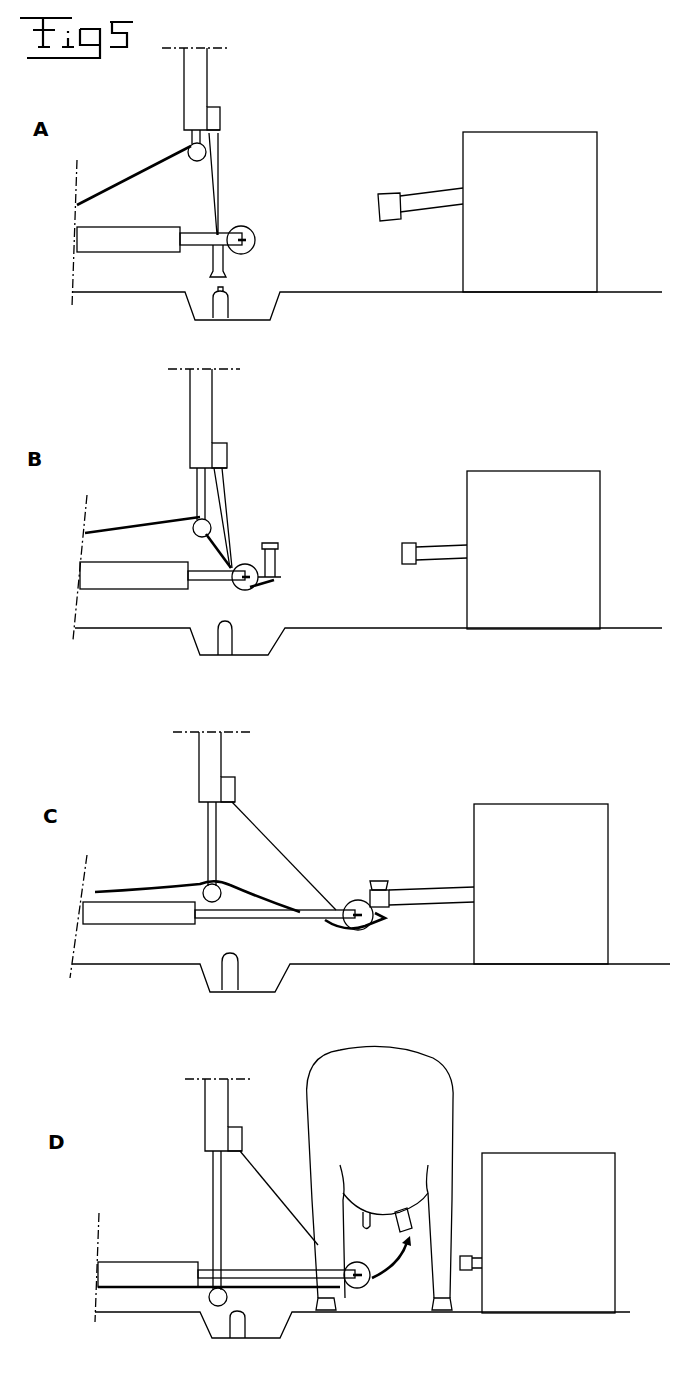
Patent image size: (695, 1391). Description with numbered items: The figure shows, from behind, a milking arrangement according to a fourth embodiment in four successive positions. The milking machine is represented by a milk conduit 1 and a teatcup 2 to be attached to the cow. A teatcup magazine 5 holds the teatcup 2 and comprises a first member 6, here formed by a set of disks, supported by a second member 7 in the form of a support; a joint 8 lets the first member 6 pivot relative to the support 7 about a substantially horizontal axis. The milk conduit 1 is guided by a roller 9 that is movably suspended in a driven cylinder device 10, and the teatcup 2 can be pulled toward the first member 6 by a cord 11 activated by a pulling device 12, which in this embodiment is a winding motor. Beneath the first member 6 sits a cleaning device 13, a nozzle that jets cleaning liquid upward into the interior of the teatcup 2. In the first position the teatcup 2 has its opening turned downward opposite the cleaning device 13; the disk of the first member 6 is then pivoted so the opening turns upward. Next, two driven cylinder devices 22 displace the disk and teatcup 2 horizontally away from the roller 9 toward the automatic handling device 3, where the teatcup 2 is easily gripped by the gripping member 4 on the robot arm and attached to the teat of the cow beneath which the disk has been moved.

In FIG. 5A, the milk conduit 1 is at (108, 185).
In FIG. 5B, the milk conduit 1 is at (105, 533).
In FIG. 5C, the milk conduit 1 is at (135, 890).
In FIG. 5D, the milk conduit 1 is at (265, 1292).
In FIG. 5A, the teatcup 2 is at (225, 262).
In FIG. 5B, the teatcup 2 is at (273, 543).
In FIG. 5C, the teatcup 2 is at (378, 880).
In FIG. 5D, the teatcup 2 is at (412, 1228).
In FIG. 5A, the automatic handling device 3 is at (495, 137).
In FIG. 5B, the automatic handling device 3 is at (505, 480).
In FIG. 5C, the automatic handling device 3 is at (512, 813).
In FIG. 5D, the automatic handling device 3 is at (535, 1163).
In FIG. 5A, the gripping member 4 is at (389, 195).
In FIG. 5B, the gripping member 4 is at (407, 545).
In FIG. 5C, the gripping member 4 is at (385, 895).
In FIG. 5D, the gripping member 4 is at (463, 1256).
In FIG. 5A, the teatcup magazine 5 is at (286, 211).
In FIG. 5B, the teatcup magazine 5 is at (306, 548).
In FIG. 5C, the teatcup magazine 5 is at (332, 864).
In FIG. 5D, the teatcup magazine 5 is at (395, 1310).
In FIG. 5A, the first member 6 is at (242, 226).
In FIG. 5B, the first member 6 is at (241, 565).
In FIG. 5C, the first member 6 is at (368, 928).
In FIG. 5D, the first member 6 is at (362, 1262).
In FIG. 5A, the second member 7 is at (190, 248).
In FIG. 5B, the second member 7 is at (210, 580).
In FIG. 5C, the second member 7 is at (278, 925).
In FIG. 5D, the second member 7 is at (262, 1275).
In FIG. 5A, the joint 8 is at (248, 240).
In FIG. 5B, the joint 8 is at (255, 588).
In FIG. 5C, the joint 8 is at (348, 930).
In FIG. 5D, the joint 8 is at (358, 1285).
In FIG. 5A, the roller 9 is at (197, 160).
In FIG. 5B, the roller 9 is at (196, 535).
In FIG. 5C, the roller 9 is at (205, 880).
In FIG. 5D, the roller 9 is at (228, 1298).
In FIG. 5A, the cylinder device 10 is at (196, 73).
In FIG. 5B, the cylinder device 10 is at (200, 393).
In FIG. 5C, the cylinder device 10 is at (213, 752).
In FIG. 5D, the cylinder device 10 is at (208, 1110).
In FIG. 5A, the cord 11 is at (218, 156).
In FIG. 5B, the cord 11 is at (225, 490).
In FIG. 5C, the cord 11 is at (260, 832).
In FIG. 5D, the cord 11 is at (258, 1167).
In FIG. 5A, the pulling device 12 is at (214, 117).
In FIG. 5B, the pulling device 12 is at (221, 452).
In FIG. 5C, the pulling device 12 is at (232, 788).
In FIG. 5D, the pulling device 12 is at (240, 1138).
In FIG. 5A, the cleaning device 13 is at (228, 304).
In FIG. 5B, the cleaning device 13 is at (230, 638).
In FIG. 5C, the cleaning device 13 is at (238, 973).
In FIG. 5D, the cleaning device 13 is at (232, 1328).
In FIG. 5A, the cylinder devices 22 is at (120, 246).
In FIG. 5B, the cylinder devices 22 is at (105, 582).
In FIG. 5C, the cylinder devices 22 is at (140, 925).
In FIG. 5D, the cylinder devices 22 is at (130, 1265).